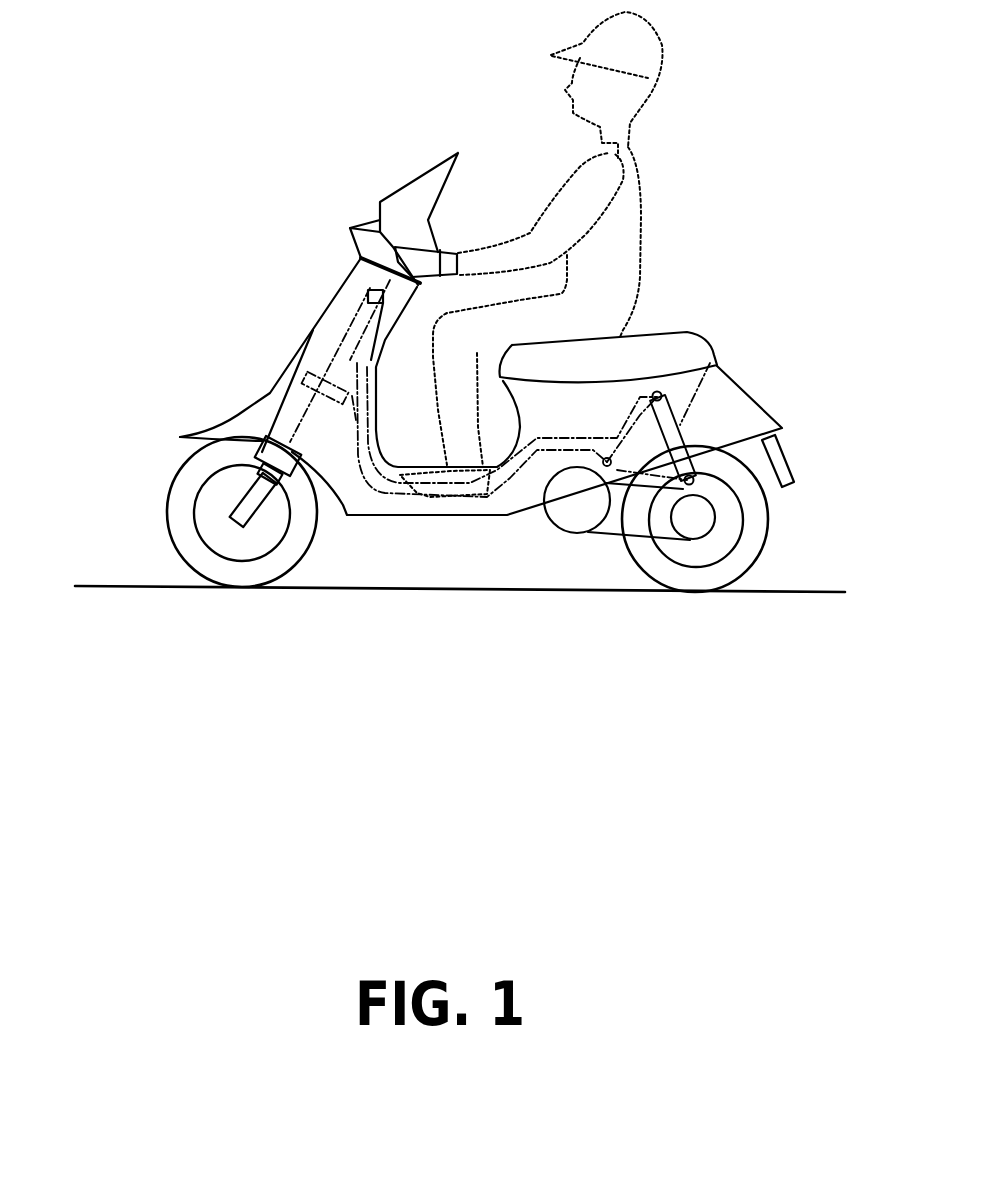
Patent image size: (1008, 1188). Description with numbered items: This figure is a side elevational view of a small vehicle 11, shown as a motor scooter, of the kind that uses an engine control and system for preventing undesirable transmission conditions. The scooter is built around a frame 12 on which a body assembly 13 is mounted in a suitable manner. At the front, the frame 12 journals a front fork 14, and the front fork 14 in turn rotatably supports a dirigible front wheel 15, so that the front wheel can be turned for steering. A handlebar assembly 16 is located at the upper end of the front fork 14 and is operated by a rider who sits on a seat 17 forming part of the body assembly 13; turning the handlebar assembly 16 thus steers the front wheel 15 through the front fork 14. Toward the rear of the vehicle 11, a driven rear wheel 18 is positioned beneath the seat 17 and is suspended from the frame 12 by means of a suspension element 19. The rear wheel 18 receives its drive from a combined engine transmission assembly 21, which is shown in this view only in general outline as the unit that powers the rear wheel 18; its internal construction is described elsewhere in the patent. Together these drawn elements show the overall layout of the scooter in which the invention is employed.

The vehicle 11 is at (738, 278).
The frame 12 is at (340, 503).
The body assembly 13 is at (313, 337).
The front fork 14 is at (257, 400).
The front wheel 15 is at (167, 498).
The handlebar assembly 16 is at (440, 250).
The seat 17 is at (660, 332).
The rear wheel 18 is at (768, 540).
The suspension element 19 is at (680, 436).
The engine transmission assembly 21 is at (605, 537).